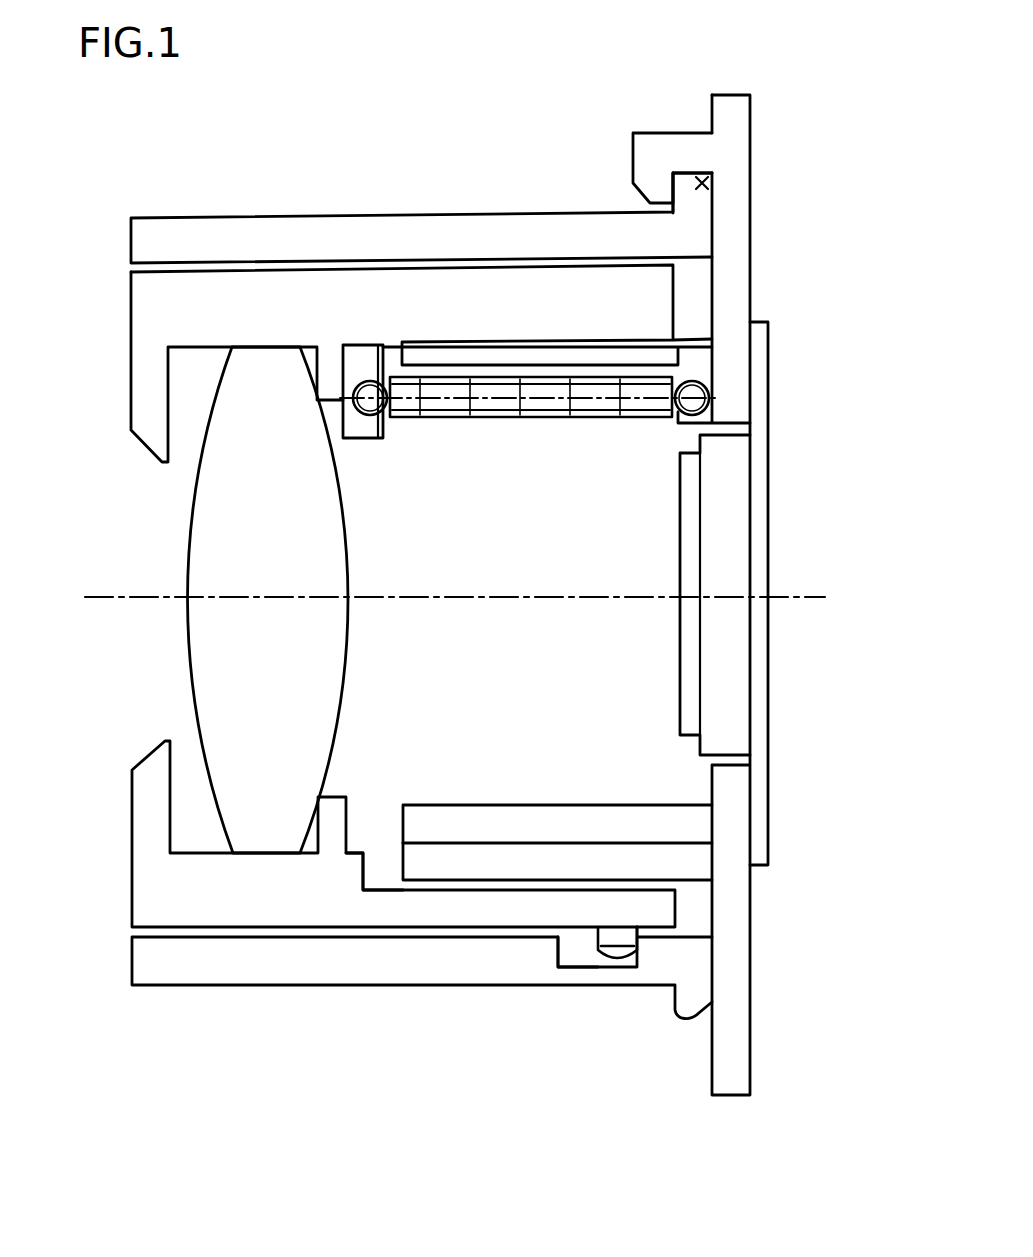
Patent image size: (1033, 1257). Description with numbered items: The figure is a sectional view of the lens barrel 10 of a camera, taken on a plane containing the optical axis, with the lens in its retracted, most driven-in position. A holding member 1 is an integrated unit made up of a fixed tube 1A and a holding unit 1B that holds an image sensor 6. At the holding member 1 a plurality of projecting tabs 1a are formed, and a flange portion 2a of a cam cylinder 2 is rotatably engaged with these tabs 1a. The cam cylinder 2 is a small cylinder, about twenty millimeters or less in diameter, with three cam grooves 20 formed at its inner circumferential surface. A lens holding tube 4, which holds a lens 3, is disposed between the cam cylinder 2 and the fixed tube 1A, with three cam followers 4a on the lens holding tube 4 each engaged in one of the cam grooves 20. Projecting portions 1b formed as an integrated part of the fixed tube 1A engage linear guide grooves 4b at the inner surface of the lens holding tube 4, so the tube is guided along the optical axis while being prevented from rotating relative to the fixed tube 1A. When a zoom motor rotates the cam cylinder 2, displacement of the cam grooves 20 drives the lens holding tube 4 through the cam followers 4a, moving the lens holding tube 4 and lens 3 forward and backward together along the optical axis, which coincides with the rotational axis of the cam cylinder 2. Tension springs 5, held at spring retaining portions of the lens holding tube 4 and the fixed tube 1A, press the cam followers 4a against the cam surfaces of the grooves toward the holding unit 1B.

The holding member 1 is at (760, 112).
The projecting tab 1a is at (642, 152).
The fixed tube 1A is at (508, 818).
The projecting portion 1b is at (603, 862).
The holding unit 1B is at (752, 282).
The cam cylinder 2 is at (418, 232).
The flange portion 2a is at (710, 177).
The lens 3 is at (190, 516).
The lens holding tube 4 is at (127, 872).
The cam follower 4a is at (592, 952).
The linear guide groove 4b is at (380, 872).
The tension spring 5 is at (492, 418).
The image sensor 6 is at (681, 538).
The lens barrel 10 is at (156, 1009).
The cam groove 20 is at (564, 953).